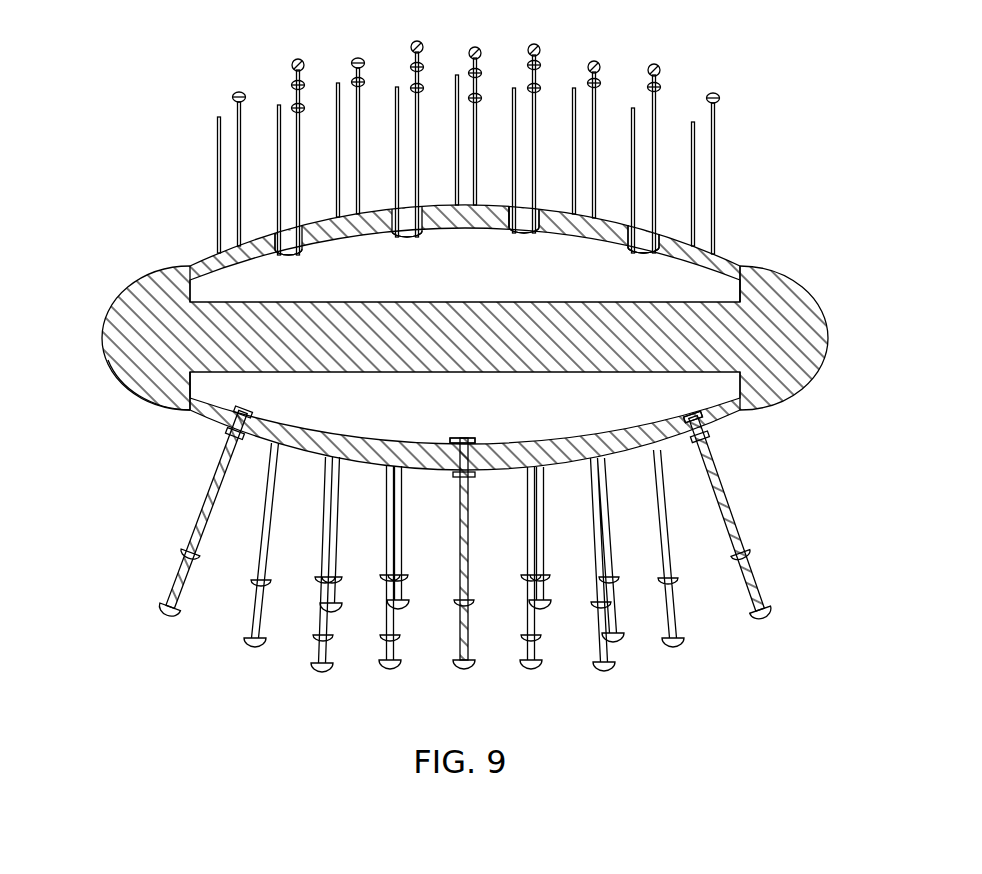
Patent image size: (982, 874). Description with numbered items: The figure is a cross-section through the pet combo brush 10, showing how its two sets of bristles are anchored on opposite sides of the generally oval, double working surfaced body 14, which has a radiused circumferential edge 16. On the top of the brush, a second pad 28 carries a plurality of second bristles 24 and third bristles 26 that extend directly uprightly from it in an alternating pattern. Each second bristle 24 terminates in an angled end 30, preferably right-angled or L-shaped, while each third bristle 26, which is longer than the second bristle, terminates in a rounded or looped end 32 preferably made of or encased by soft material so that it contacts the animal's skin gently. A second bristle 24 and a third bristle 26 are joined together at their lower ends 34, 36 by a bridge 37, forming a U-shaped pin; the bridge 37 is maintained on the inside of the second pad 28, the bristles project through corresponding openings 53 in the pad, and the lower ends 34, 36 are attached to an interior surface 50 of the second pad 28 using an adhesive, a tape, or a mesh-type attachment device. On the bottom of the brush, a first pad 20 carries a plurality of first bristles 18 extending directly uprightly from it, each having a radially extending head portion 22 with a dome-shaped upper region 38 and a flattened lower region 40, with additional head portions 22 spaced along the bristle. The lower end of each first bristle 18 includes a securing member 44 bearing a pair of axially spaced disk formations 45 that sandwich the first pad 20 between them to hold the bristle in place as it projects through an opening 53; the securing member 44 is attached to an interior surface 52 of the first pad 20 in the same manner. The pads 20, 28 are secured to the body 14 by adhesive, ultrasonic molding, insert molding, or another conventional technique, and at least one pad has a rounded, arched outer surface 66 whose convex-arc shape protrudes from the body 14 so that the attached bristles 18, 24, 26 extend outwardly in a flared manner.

The combo brush 10 is at (107, 168).
The body 14 is at (108, 342).
The radiused circumferential edge 16 is at (118, 382).
The first bristle 18 is at (195, 505).
The first pad 20 is at (200, 422).
The head portion 22 is at (180, 547).
The second bristle 24 is at (219, 147).
The third bristle 26 is at (241, 115).
The second pad 28 is at (203, 258).
The angled end 30 is at (279, 105).
The rounded end 32 is at (301, 85).
The lower end 34 is at (195, 281).
The lower end 36 is at (300, 255).
The bridge 37 is at (413, 238).
The dome-shaped upper region 38 is at (253, 645).
The flattened lower region 40 is at (263, 580).
The securing member 44 is at (478, 447).
The disk formations 45 is at (242, 450).
The interior surface 50 is at (740, 279).
The interior surface 52 is at (752, 382).
The openings 53 is at (540, 230).
The rounded outer surface 66 is at (720, 252).